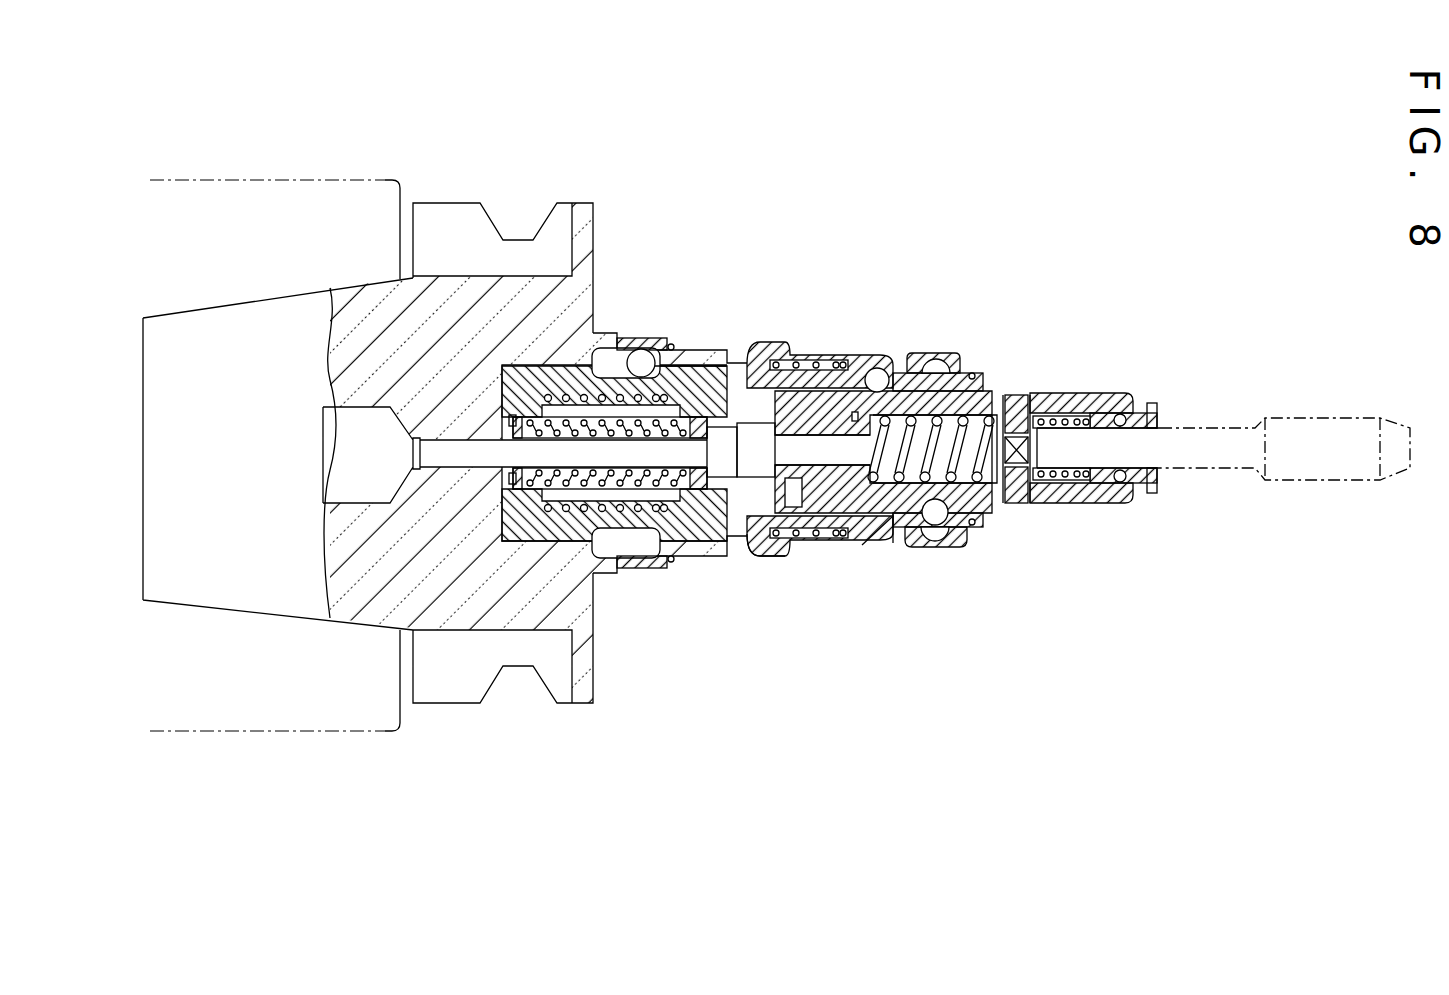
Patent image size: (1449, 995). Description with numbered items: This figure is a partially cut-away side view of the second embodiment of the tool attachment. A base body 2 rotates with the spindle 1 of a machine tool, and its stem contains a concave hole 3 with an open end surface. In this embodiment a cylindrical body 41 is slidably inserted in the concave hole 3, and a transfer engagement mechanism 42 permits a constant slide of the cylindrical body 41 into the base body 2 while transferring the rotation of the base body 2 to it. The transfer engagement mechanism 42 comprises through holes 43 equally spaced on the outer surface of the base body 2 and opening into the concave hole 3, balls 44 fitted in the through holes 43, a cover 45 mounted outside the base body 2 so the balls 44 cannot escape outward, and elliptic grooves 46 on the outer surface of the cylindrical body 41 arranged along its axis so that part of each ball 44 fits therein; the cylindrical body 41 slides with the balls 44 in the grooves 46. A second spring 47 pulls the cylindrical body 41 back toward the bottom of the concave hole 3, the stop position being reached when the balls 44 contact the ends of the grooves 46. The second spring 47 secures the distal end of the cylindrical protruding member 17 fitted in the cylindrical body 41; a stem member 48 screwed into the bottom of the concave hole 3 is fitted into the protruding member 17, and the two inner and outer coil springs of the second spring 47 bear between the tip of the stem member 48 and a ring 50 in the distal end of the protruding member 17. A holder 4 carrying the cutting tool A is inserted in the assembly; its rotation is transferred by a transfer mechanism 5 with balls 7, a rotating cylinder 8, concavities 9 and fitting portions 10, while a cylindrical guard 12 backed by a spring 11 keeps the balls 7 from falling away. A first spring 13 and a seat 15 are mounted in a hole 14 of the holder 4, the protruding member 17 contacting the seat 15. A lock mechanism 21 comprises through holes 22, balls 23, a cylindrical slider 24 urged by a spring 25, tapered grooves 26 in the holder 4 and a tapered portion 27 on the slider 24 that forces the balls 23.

The spindle 1 is at (207, 188).
The base body 2 is at (507, 617).
The concave hole 3 is at (596, 548).
The holder 4 is at (983, 500).
The transfer mechanism 5 is at (953, 551).
The balls 7 is at (933, 527).
The rotating cylinder 8 is at (935, 357).
The concavities 9 is at (957, 530).
The fitting portions 10 is at (953, 371).
The spring 11 is at (543, 400).
The cylindrical guard 12 is at (782, 388).
The first spring 13 is at (1023, 503).
The hole 14 is at (1003, 390).
The seat 15 is at (863, 532).
The protruding member 17 is at (735, 392).
The lock mechanism 21 is at (877, 549).
The through holes 22 is at (870, 375).
The balls 23 is at (873, 367).
The cylindrical slider 24 is at (752, 553).
The spring 25 is at (792, 540).
The tapered grooves 26 is at (893, 530).
The tapered portion 27 is at (898, 365).
The cylindrical body 41 is at (563, 367).
The transfer engagement mechanism 42 is at (662, 363).
The through holes 43 is at (643, 363).
The balls 44 is at (653, 362).
The cover 45 is at (641, 568).
The elliptic grooves 46 is at (607, 377).
The second spring 47 is at (687, 481).
The stem member 48 is at (433, 453).
The ring 50 is at (513, 478).
The cutting tool A is at (1320, 428).